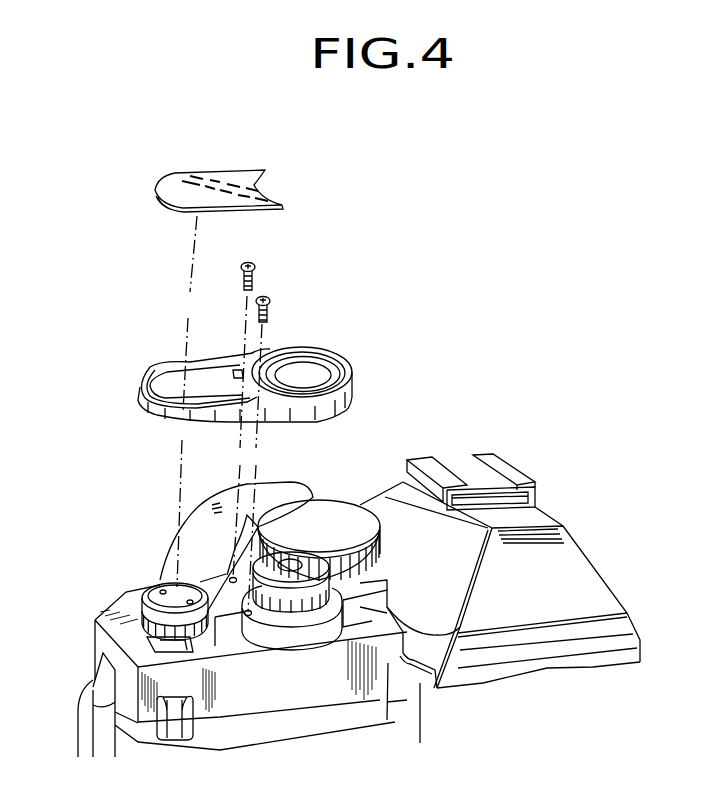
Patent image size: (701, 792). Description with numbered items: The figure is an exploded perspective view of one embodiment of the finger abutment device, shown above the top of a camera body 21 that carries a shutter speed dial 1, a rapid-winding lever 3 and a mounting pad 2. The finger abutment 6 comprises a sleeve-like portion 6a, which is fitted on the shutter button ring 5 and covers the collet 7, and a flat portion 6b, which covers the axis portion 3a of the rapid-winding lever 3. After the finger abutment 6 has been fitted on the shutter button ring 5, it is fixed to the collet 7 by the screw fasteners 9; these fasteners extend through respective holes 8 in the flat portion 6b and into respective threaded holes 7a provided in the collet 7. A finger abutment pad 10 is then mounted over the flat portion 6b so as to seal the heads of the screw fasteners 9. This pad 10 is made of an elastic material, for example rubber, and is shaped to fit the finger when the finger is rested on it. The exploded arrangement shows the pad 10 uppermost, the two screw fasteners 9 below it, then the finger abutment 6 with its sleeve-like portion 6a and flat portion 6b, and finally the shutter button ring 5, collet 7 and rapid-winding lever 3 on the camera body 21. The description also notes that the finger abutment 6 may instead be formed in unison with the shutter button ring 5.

The shutter speed dial 1 is at (348, 515).
The mounting pad 2 is at (318, 567).
The rapid-winding lever 3 is at (167, 560).
The axis portion 3a is at (152, 587).
The shutter button ring 5 is at (290, 598).
The finger abutment 6 is at (260, 361).
The sleeve-like portion 6a is at (335, 358).
The flat portion 6b is at (162, 372).
The collet 7 is at (323, 612).
The threaded holes 7a is at (248, 616).
The holes 8 is at (262, 400).
The screw fasteners 9 is at (270, 300).
The finger abutment pad 10 is at (214, 172).
The camera body 21 is at (95, 643).